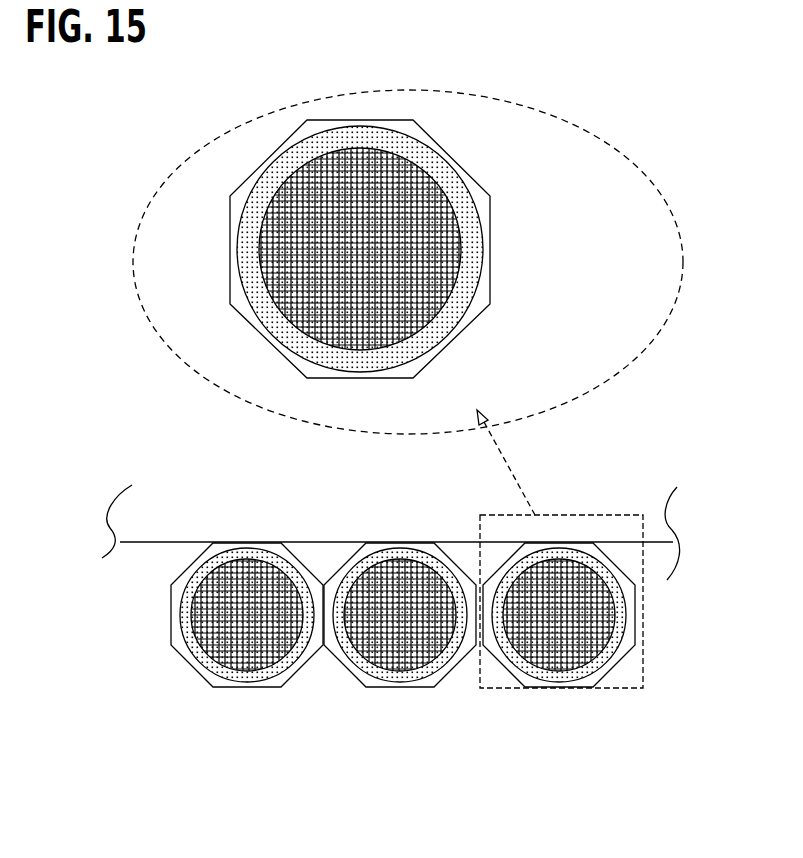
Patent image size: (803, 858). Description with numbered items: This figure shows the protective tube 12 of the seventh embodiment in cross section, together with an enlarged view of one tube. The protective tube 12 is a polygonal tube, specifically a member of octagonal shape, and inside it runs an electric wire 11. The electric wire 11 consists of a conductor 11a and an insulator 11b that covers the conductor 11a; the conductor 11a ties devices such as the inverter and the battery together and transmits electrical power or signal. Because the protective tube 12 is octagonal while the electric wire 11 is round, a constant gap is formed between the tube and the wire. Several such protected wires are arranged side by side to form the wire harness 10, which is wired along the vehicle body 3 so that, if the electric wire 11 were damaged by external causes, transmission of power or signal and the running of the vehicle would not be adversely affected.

The vehicle body 3 is at (142, 530).
The wire harness 10 is at (643, 693).
The electric wire 11 is at (443, 249).
The conductor 11a is at (393, 316).
The insulator 11b is at (463, 217).
The protective tube 12 is at (230, 204).